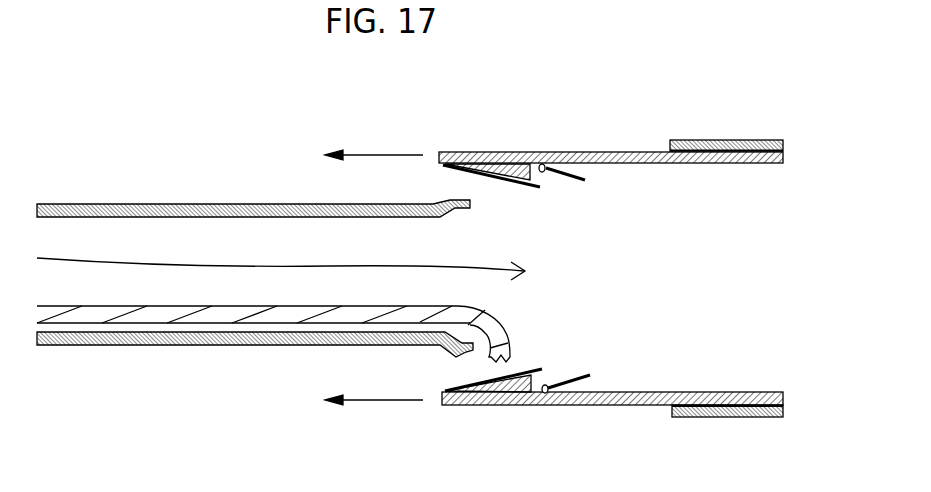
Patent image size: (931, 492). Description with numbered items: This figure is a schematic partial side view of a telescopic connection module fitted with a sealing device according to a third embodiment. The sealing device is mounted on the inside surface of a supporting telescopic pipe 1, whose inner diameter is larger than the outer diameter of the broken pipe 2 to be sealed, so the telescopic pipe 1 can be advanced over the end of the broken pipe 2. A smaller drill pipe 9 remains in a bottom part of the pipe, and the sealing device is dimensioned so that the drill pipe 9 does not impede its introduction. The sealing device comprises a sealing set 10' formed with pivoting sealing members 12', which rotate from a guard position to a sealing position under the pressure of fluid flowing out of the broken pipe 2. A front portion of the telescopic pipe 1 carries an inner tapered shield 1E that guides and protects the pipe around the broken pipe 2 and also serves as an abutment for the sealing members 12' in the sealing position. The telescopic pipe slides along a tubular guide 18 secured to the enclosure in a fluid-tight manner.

The telescopic pipe 1 is at (676, 377).
The inner tapered shield 1E is at (480, 168).
The broken pipe 2 is at (249, 194).
The drill pipe 9 is at (152, 315).
The sealing set 10' is at (576, 338).
The pivoting sealing members 12' is at (581, 143).
The tubular guide 18 is at (747, 140).